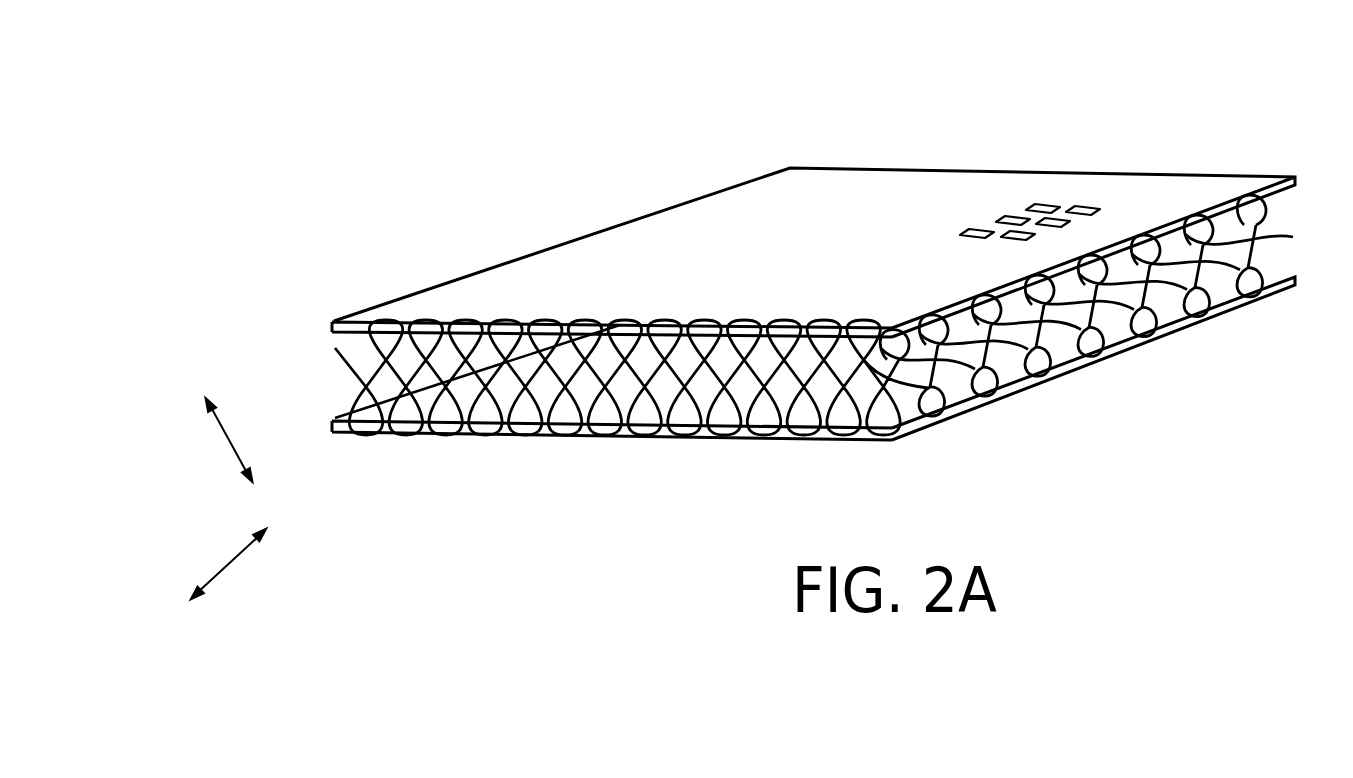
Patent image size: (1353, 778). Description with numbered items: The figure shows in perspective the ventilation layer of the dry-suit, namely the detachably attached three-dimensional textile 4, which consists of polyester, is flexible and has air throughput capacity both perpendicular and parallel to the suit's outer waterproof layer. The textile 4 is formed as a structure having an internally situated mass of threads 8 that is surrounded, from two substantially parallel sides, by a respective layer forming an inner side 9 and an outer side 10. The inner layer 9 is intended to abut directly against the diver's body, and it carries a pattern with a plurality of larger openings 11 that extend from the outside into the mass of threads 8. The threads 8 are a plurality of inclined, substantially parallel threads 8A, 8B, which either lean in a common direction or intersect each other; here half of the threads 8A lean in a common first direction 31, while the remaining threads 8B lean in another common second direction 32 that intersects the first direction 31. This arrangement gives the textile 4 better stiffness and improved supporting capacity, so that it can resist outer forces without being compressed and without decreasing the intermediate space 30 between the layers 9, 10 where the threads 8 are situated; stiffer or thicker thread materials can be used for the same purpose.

The three-dimensional textile 4 is at (840, 152).
The mass of threads 8 is at (599, 355).
The inclined threads 8A is at (358, 373).
The inclined threads 8B is at (380, 367).
The inner side layer 9 is at (1160, 190).
The outer side layer 10 is at (540, 458).
The openings 11 is at (1047, 208).
The intermediate space 30 is at (738, 388).
The first direction 31 is at (227, 443).
The second direction 32 is at (232, 568).